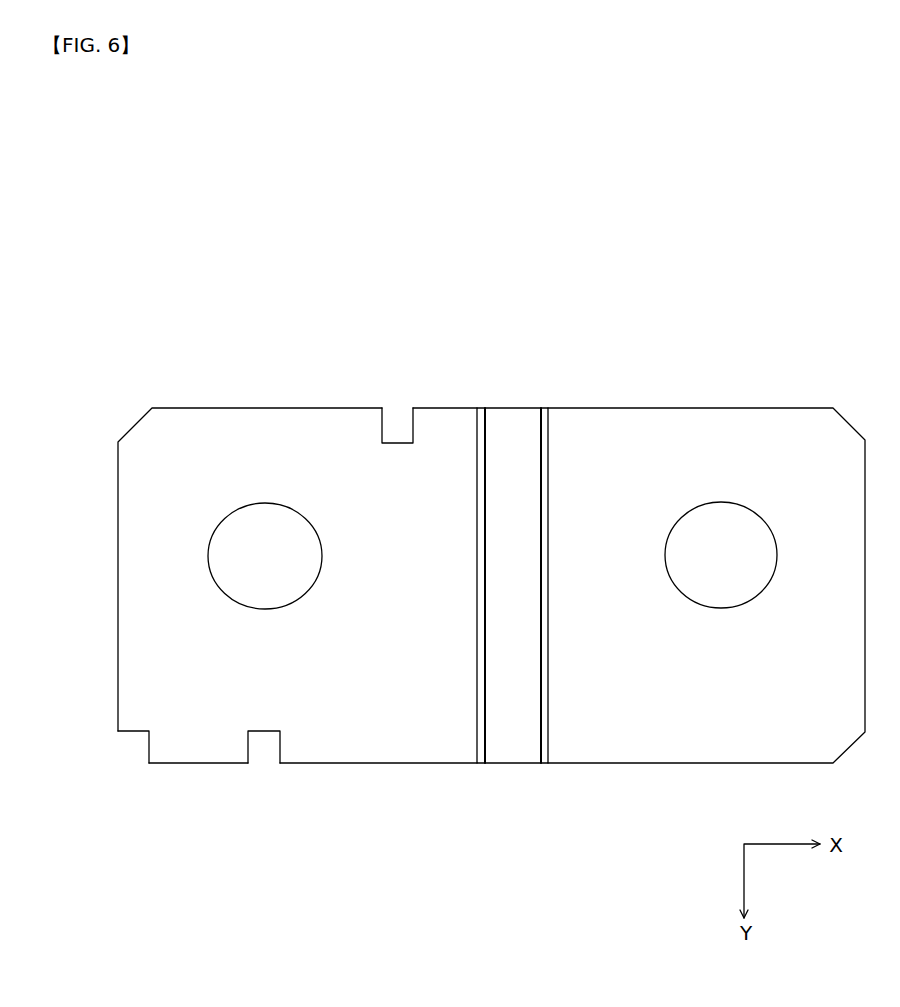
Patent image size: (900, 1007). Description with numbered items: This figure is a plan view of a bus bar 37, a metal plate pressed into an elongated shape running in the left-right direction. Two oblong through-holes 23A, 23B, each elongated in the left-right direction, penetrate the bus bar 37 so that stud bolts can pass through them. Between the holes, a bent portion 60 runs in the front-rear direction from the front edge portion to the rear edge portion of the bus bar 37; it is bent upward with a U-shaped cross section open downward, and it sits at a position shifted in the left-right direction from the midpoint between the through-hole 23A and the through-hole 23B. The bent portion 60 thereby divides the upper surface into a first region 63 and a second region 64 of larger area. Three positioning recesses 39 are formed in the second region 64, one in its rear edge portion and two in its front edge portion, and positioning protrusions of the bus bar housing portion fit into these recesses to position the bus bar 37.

The bus bar 37 is at (491, 591).
The through-hole 23A is at (210, 566).
The through-hole 23B is at (776, 562).
The positioning recess 39 is at (412, 432).
The bent portion 60 is at (510, 723).
The first region 63 is at (632, 435).
The second region 64 is at (301, 438).